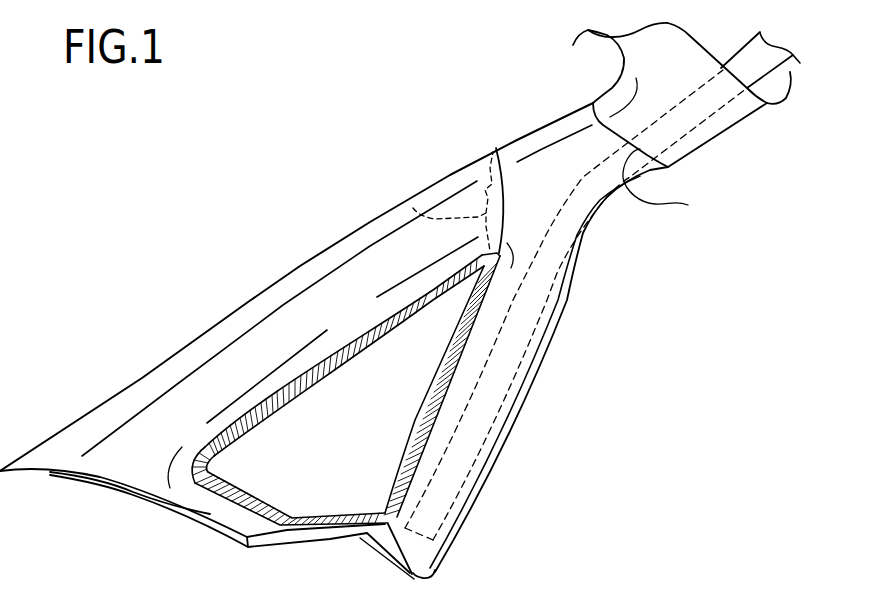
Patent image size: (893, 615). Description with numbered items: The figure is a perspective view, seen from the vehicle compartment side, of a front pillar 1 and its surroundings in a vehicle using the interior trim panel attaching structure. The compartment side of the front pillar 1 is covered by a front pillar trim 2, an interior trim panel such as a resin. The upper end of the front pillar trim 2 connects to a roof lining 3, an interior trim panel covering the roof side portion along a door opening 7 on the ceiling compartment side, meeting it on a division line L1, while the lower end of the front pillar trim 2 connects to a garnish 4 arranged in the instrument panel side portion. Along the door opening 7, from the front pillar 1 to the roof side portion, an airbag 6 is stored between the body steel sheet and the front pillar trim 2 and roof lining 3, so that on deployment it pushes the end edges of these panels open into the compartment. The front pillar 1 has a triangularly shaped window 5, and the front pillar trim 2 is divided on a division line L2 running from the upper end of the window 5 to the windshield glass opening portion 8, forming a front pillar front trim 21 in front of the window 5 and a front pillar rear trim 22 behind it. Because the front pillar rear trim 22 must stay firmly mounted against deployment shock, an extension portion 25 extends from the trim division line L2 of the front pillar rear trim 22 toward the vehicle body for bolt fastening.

The front pillar 1 is at (206, 255).
The front pillar trim 2 is at (420, 92).
The front pillar front trim 21 is at (449, 176).
The front pillar rear trim 22 is at (519, 140).
The extension portion 25 is at (413, 208).
The roof lining 3 is at (727, 134).
The garnish 4 is at (367, 535).
The triangularly shaped window 5 is at (328, 447).
The airbag 6 is at (757, 55).
The door opening 7 is at (696, 371).
The windshield glass opening portion 8 is at (283, 197).
The division line L1 is at (673, 187).
The division line L2 is at (507, 220).